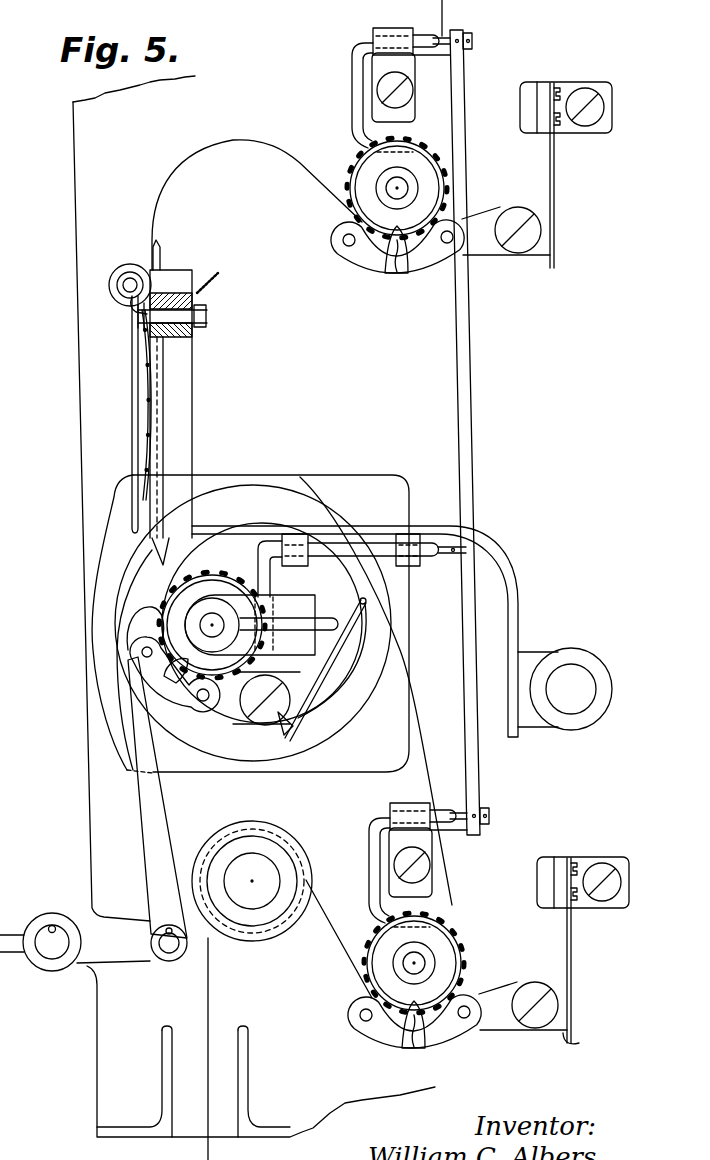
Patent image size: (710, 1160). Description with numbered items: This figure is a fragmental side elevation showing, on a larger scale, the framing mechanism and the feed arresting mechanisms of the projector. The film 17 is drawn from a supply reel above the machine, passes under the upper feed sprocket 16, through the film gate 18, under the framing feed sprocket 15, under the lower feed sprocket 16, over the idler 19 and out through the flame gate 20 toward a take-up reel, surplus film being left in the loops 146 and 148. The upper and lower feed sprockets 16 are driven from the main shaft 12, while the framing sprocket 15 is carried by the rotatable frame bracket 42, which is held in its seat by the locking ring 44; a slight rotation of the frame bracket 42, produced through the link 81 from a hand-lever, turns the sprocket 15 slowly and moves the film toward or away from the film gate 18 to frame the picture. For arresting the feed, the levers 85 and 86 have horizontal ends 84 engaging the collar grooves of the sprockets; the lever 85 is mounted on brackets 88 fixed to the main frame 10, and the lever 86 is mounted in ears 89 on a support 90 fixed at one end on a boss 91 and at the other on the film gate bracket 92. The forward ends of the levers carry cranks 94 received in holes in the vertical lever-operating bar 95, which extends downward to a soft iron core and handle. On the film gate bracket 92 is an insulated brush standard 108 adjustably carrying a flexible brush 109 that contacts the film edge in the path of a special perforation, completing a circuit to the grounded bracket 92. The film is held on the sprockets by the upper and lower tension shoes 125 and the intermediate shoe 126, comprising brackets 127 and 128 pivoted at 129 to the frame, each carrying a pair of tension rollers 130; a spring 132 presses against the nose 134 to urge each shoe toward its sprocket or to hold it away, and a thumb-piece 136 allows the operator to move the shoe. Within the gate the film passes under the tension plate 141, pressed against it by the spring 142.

The main frame 10 is at (252, 618).
The main shaft 12 is at (571, 689).
The framing feed sprocket 15 is at (215, 592).
The feed sprocket 16 is at (357, 162).
The film 17 is at (152, 243).
The film gate 18 is at (140, 328).
The idler 19 is at (272, 834).
The flame gate 20 is at (222, 1100).
The rotatable frame bracket 42 is at (261, 625).
The locking ring 44 is at (335, 728).
The link 81 is at (168, 852).
The horizontal end 84 is at (410, 150).
The lever 85 is at (366, 40).
The lever 86 is at (368, 557).
The bracket 88 is at (380, 69).
The ears 89 is at (297, 568).
The support 90 is at (428, 523).
The boss 91 is at (531, 650).
The film gate bracket 92 is at (187, 453).
The crank 94 is at (474, 42).
The lever-operating bar 95 is at (473, 386).
The brush standard 108 is at (136, 313).
The flexible brush 109 is at (140, 340).
The tension shoe 125 is at (378, 282).
The intermediate shoe 126 is at (178, 727).
The bracket 127 is at (489, 258).
The bracket 128 is at (236, 726).
The pivot 129 is at (526, 256).
The tension roller 130 is at (128, 655).
The spring 132 is at (320, 696).
The nose 134 is at (285, 732).
The thumb-piece 136 is at (143, 700).
The tension plate 141 is at (130, 400).
The spring 142 is at (150, 393).
The loop 146 is at (216, 134).
The loop 148 is at (418, 722).